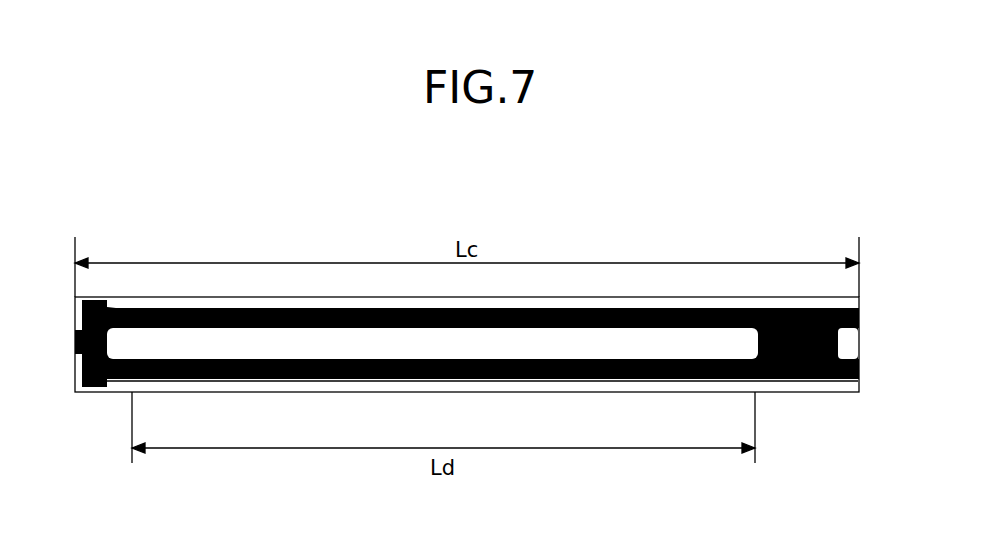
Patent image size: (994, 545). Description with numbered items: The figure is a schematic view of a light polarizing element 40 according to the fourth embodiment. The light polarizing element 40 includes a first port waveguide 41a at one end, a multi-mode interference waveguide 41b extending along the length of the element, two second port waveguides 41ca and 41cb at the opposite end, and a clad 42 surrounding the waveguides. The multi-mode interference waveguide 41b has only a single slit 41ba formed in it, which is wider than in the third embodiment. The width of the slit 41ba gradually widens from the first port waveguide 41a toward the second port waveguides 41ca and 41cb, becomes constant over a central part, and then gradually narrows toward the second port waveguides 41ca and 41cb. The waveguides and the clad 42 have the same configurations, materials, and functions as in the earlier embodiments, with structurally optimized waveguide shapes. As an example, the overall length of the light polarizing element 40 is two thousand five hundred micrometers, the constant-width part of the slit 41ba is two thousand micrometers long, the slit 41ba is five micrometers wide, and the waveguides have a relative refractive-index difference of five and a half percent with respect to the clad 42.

The light polarizing element 40 is at (728, 206).
The first port waveguide 41a is at (76, 360).
The multi-mode interference waveguide 41b is at (245, 382).
The slit 41ba is at (487, 354).
The second port waveguide 41ca is at (850, 308).
The second port waveguide 41cb is at (850, 382).
The clad 42 is at (119, 383).